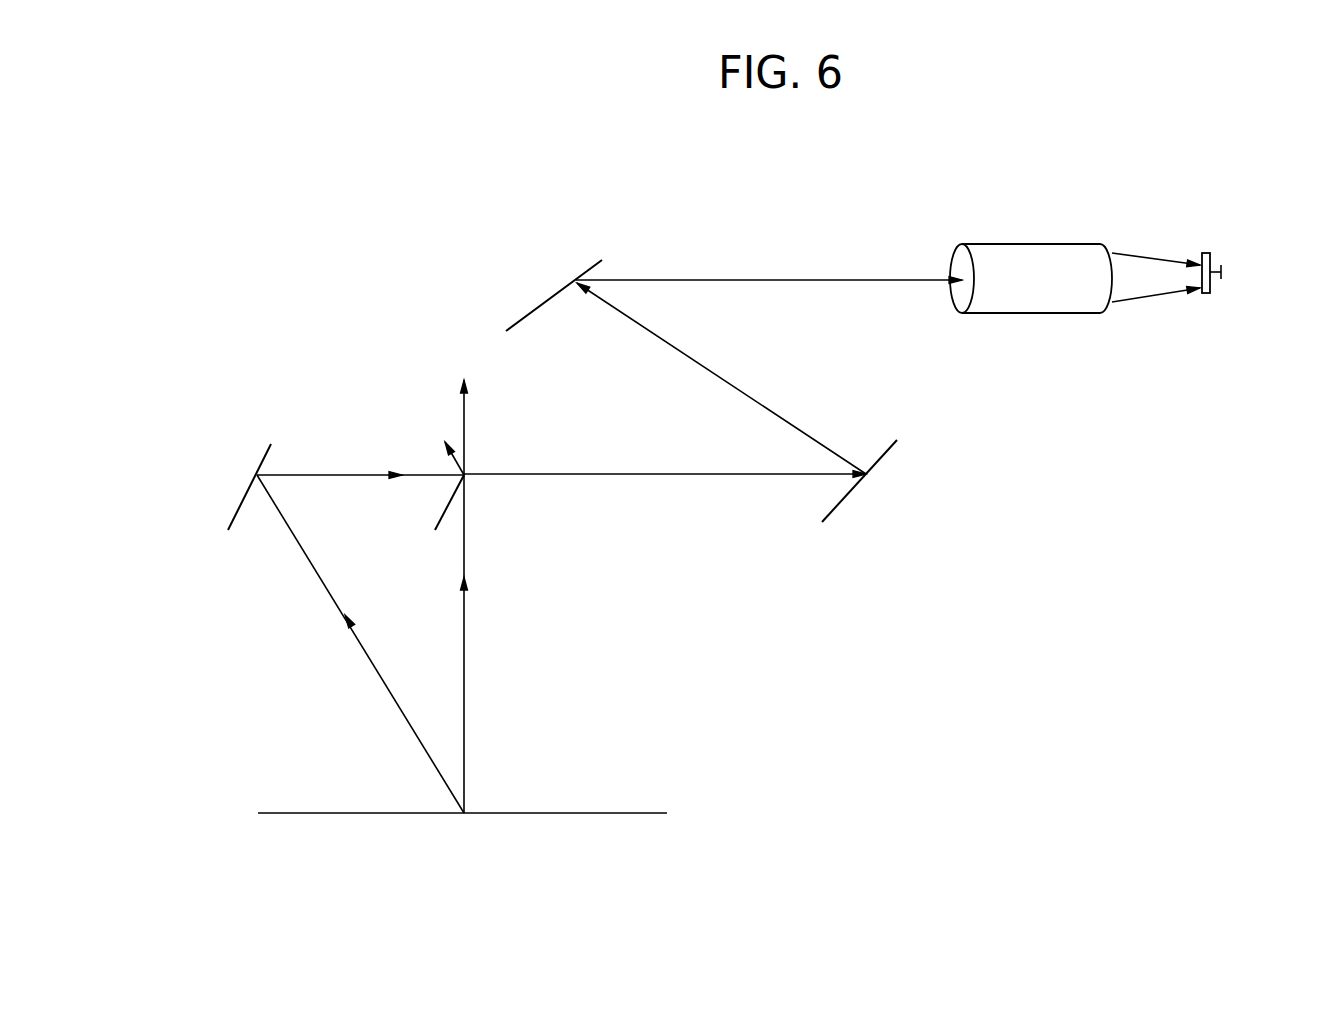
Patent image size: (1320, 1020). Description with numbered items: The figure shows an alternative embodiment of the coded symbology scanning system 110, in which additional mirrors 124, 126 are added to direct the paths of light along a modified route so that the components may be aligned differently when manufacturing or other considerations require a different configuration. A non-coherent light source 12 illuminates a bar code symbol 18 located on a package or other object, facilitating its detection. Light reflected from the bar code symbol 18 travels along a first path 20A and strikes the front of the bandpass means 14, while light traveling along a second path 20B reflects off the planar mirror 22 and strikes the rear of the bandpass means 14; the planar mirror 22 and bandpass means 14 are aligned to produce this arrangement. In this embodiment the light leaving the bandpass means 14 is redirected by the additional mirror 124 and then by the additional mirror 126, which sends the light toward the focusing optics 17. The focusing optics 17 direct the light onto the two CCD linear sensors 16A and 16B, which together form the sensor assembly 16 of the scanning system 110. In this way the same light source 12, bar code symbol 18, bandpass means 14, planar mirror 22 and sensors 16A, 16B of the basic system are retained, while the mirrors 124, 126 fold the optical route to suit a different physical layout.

The scanning system 110 is at (330, 121).
The mirror 126 is at (589, 268).
The focusing optics 17 is at (1027, 244).
The detector 16 is at (1210, 255).
The CCD linear sensor 16B is at (1202, 258).
The CCD linear sensor 16A is at (1202, 294).
The mirror 124 is at (932, 481).
The planar mirror 22 is at (346, 470).
The bandpass means 14 is at (470, 467).
The first path 20A is at (487, 596).
The second path 20B is at (360, 644).
The non-coherent light source 12 is at (553, 723).
The bar code symbol 18 is at (452, 813).